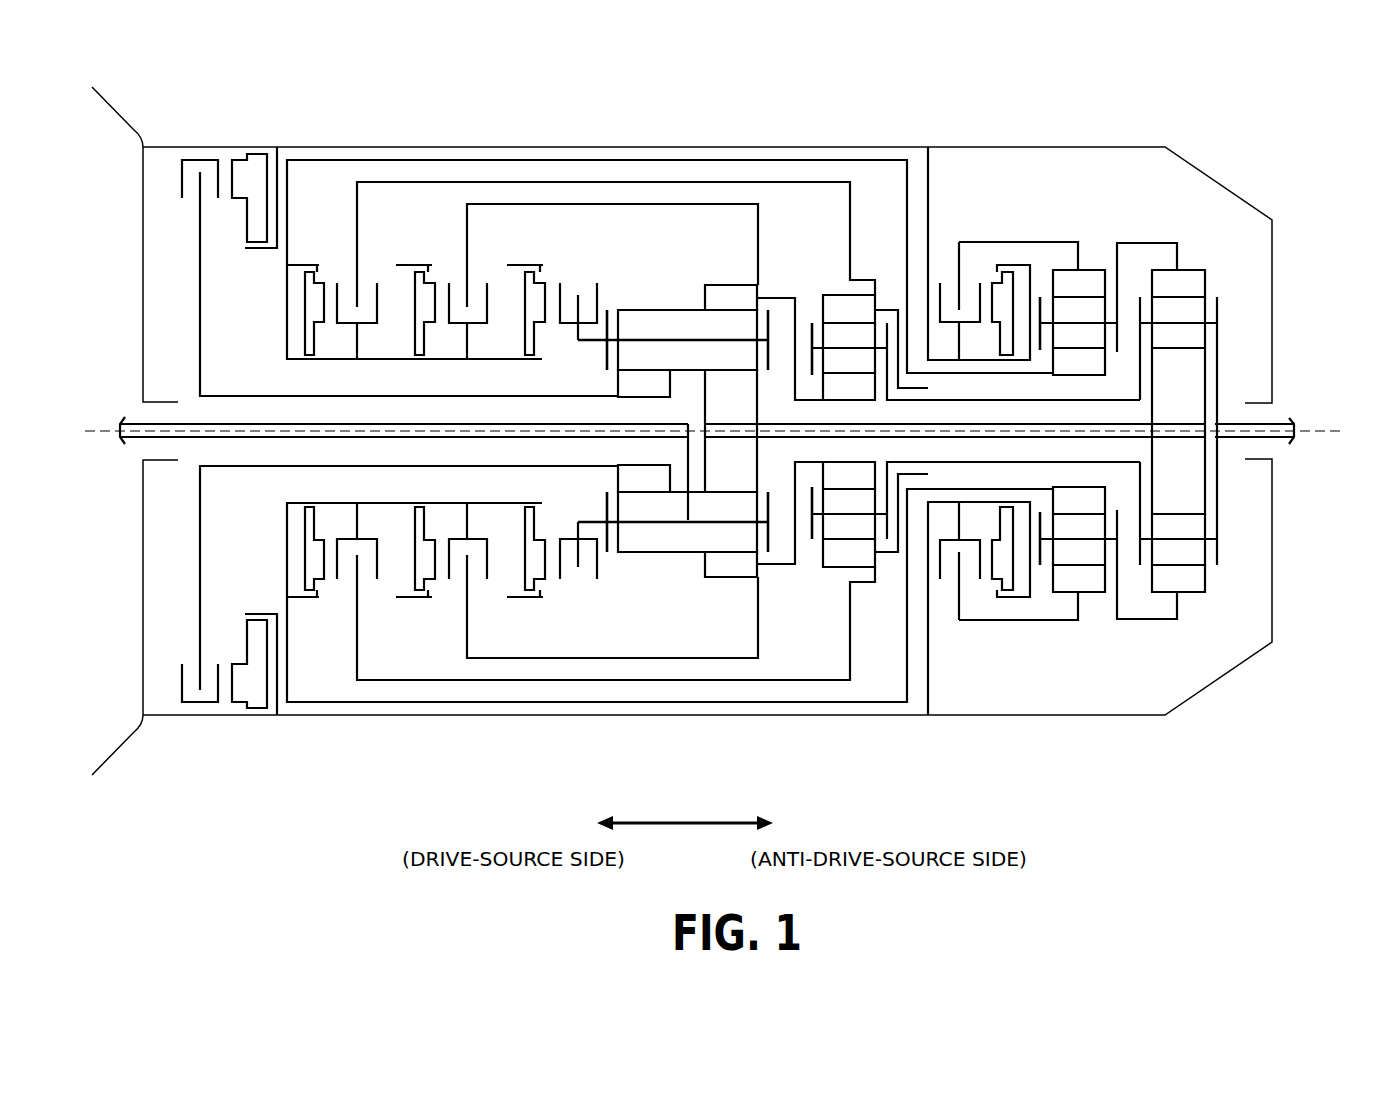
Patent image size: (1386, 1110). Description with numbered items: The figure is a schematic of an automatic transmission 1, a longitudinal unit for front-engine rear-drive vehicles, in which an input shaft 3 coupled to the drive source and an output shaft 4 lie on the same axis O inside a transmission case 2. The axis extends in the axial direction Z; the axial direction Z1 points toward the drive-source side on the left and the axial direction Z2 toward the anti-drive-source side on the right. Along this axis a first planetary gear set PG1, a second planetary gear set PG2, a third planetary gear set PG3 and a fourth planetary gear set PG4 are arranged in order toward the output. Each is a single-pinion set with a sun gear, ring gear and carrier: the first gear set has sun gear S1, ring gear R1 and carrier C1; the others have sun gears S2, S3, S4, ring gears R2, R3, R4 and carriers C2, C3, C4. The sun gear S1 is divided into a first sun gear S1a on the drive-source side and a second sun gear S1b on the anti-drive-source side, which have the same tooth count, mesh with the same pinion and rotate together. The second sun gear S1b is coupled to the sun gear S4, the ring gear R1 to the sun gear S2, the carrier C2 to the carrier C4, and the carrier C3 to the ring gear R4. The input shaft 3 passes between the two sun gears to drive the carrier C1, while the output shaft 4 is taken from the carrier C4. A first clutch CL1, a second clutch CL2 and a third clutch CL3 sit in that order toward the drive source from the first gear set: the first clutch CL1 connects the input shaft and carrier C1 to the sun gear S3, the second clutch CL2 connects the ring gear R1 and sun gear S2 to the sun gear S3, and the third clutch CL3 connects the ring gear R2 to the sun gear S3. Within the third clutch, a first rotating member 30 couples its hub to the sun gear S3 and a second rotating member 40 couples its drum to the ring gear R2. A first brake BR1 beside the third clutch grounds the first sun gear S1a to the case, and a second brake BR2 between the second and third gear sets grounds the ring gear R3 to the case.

The automatic transmission 1 is at (1242, 146).
The transmission case 2 is at (786, 147).
The input shaft 3 is at (136, 422).
The output shaft 4 is at (1288, 424).
The first rotating member 30 is at (311, 160).
The second rotating member 40 is at (548, 203).
The first brake BR1 is at (193, 196).
The second brake BR2 is at (945, 279).
The first clutch CL1 is at (582, 286).
The second clutch CL2 is at (460, 288).
The third clutch CL3 is at (350, 286).
The first planetary gear set PG1 is at (687, 395).
The second planetary gear set PG2 is at (968, 390).
The third planetary gear set PG3 is at (1108, 411).
The fourth planetary gear set PG4 is at (1192, 397).
The ring gear of first gear set R1 is at (731, 431).
The ring gear of second gear set R2 is at (849, 431).
The ring gear of third gear set R3 is at (1079, 431).
The ring gear of fourth gear set R4 is at (1178, 431).
The sun gear of first gear set S1 is at (654, 431).
The first sun gear S1a is at (644, 431).
The second sun gear S1b is at (731, 431).
The sun gear of second gear set S2 is at (849, 431).
The sun gear of third gear set S3 is at (1079, 431).
The sun gear of fourth gear set S4 is at (1178, 431).
The carrier of first gear set C1 is at (686, 431).
The carrier of second gear set C2 is at (888, 325).
The carrier of third gear set C3 is at (1112, 232).
The carrier of fourth gear set C4 is at (1187, 268).
The axial direction Z is at (685, 806).
The axial direction toward drive-source side Z1 is at (574, 824).
The axial direction toward anti-drive-source side Z2 is at (800, 824).
The axis O is at (1333, 440).